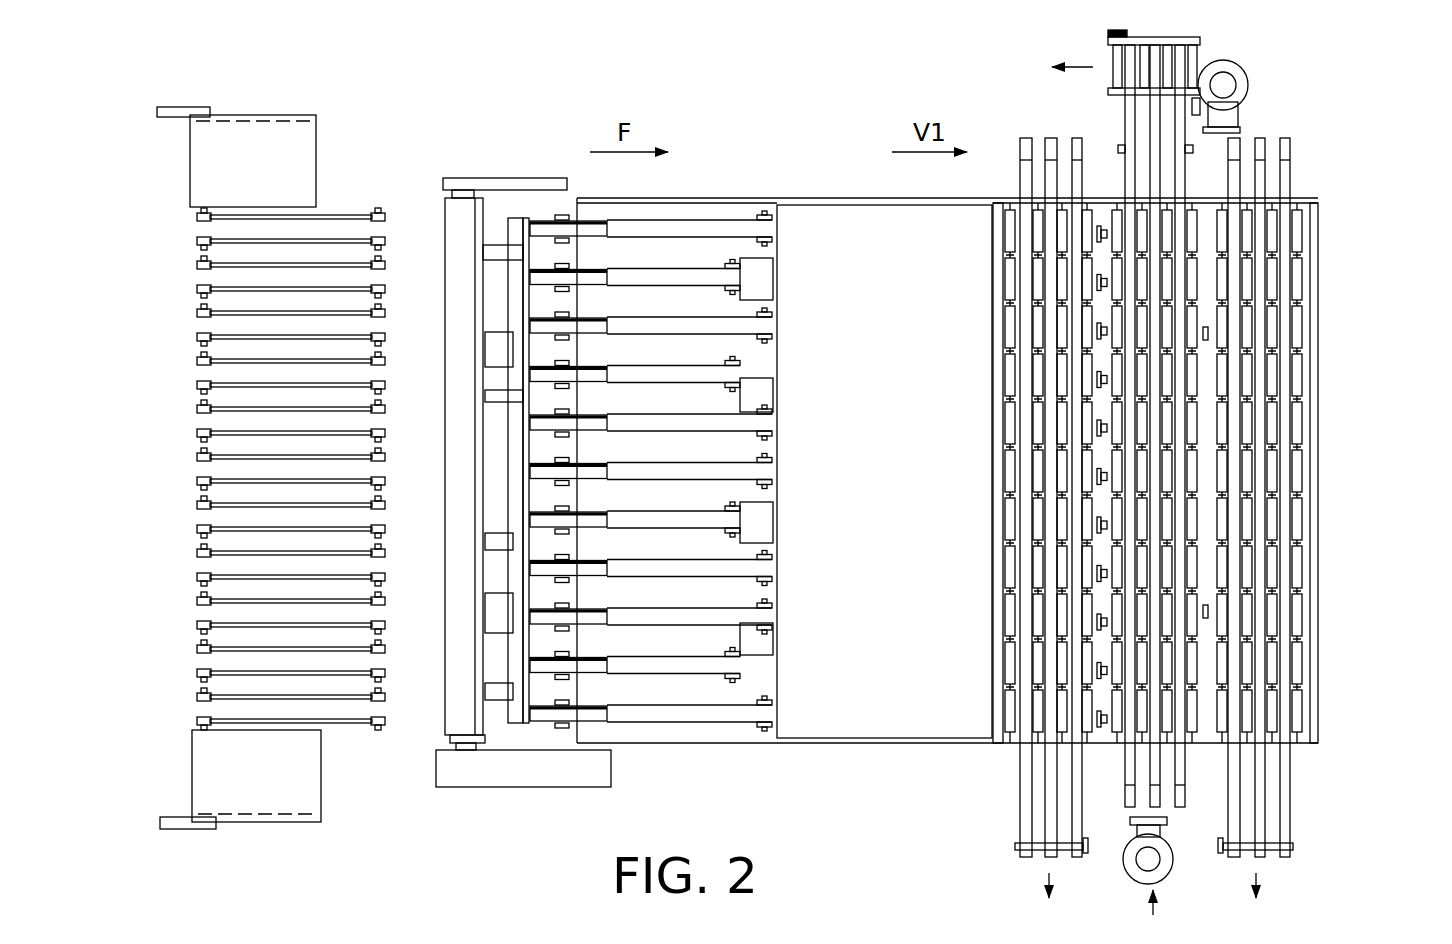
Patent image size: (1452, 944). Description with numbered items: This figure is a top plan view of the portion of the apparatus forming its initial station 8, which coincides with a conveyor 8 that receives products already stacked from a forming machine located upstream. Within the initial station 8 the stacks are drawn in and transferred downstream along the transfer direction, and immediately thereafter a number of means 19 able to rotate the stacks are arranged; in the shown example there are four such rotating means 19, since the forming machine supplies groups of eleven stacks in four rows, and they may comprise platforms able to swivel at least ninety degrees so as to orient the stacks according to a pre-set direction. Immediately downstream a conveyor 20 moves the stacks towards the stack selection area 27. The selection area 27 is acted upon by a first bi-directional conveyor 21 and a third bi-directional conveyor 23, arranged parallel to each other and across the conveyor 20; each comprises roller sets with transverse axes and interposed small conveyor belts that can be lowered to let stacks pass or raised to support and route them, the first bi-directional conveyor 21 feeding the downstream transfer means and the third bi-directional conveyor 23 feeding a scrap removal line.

The initial station 8 is at (430, 257).
The means able to rotate the stacks 19 is at (768, 402).
The conveyor 20 is at (867, 247).
The first bi-directional conveyor 21 is at (1050, 797).
The third bi-directional conveyor 23 is at (1290, 783).
The stack selection area 27 is at (1323, 343).